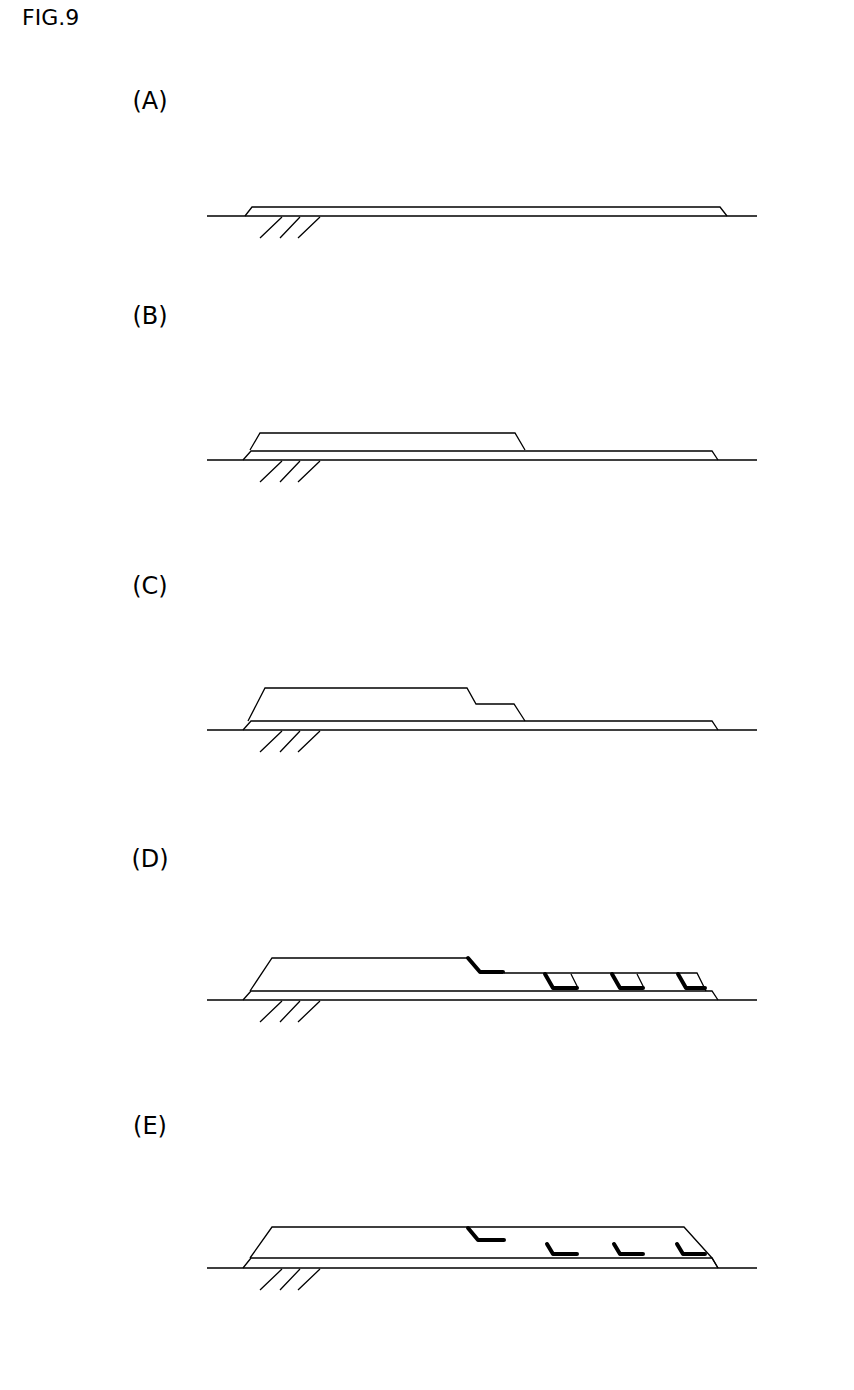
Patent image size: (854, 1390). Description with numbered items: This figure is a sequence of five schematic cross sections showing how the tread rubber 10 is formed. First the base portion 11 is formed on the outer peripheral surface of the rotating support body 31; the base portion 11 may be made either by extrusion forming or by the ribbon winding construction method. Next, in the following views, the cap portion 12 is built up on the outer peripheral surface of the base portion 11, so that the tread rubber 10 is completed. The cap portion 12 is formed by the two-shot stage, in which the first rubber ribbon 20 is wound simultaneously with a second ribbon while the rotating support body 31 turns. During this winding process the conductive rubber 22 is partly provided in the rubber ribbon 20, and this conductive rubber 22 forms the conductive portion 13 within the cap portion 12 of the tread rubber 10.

The tread rubber 10 is at (645, 1226).
The base portion 11 is at (402, 218).
The cap portion 12 is at (337, 440).
The conductive portion 13 is at (550, 1246).
The first rubber ribbon 20 is at (491, 960).
The conductive rubber 22 is at (468, 956).
The rotating support body 31 is at (222, 215).